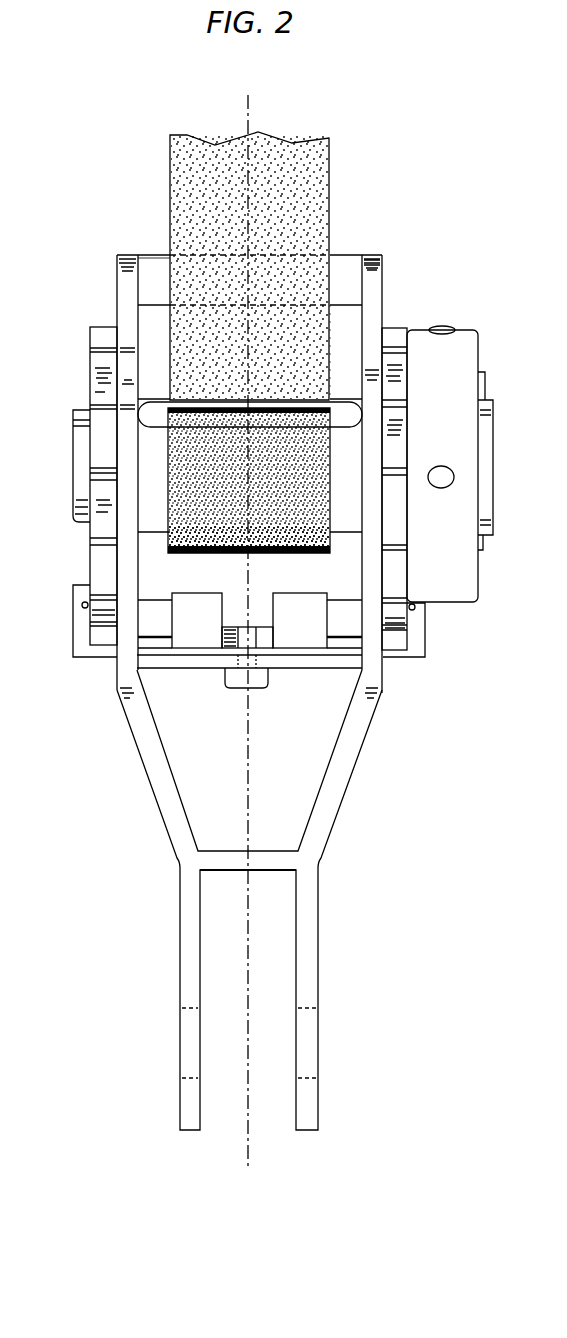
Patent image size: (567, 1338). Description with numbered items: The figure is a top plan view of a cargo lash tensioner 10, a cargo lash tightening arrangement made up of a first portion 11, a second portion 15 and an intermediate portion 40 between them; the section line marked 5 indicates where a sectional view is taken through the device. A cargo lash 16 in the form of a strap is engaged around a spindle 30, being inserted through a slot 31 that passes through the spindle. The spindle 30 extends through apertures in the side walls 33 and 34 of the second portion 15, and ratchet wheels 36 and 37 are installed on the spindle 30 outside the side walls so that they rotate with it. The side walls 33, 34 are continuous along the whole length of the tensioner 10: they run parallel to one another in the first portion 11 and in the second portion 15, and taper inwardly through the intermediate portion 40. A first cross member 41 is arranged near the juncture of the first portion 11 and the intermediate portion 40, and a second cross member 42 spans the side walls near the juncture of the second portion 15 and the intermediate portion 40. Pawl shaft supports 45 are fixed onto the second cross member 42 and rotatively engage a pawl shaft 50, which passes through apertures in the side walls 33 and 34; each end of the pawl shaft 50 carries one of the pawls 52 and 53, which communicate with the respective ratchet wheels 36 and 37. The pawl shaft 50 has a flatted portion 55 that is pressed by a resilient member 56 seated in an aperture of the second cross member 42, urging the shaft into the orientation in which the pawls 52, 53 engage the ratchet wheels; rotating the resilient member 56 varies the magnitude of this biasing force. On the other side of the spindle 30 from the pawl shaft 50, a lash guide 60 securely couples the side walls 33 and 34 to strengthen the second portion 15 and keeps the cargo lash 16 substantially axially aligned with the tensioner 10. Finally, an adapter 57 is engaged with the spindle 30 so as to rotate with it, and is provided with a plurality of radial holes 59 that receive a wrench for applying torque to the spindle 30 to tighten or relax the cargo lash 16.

The section line 5- 5 is at (248, 95).
The cargo lash tensioner 10 is at (58, 705).
The first portion 11 is at (340, 966).
The second portion 15 is at (404, 259).
The cargo lash 16 is at (329, 193).
The spindle 30 is at (345, 517).
The slot 31 is at (343, 352).
The side wall 33 is at (370, 262).
The side wall 34 is at (127, 277).
The ratchet wheel 36 is at (398, 331).
The ratchet wheel 37 is at (103, 331).
The intermediate portion 40 is at (386, 747).
The first cross member 41 is at (280, 855).
The second cross member 42 is at (300, 663).
The pawl shaft support 45 is at (310, 595).
The pawl shaft 50 is at (150, 609).
The pawl 52 is at (400, 570).
The pawl 53 is at (98, 567).
The flatted portion 55 is at (234, 630).
The resilient member 56 is at (238, 649).
The adapter 57 is at (465, 341).
The radial holes 59 is at (442, 331).
The lash guide 60 is at (155, 261).